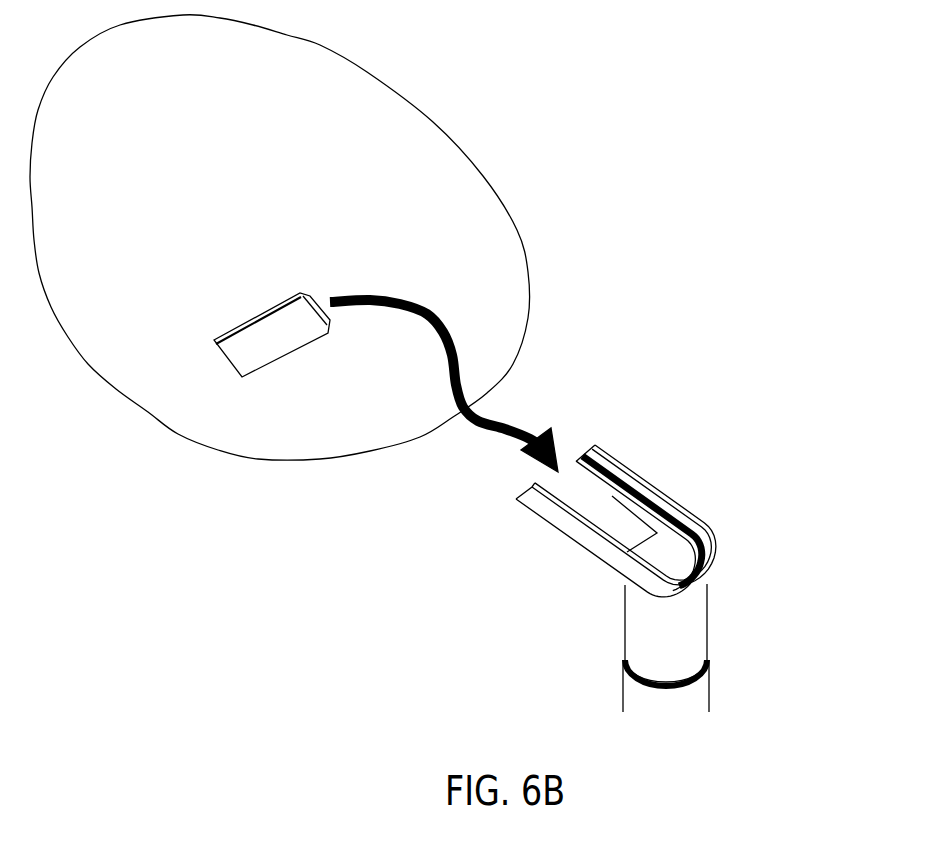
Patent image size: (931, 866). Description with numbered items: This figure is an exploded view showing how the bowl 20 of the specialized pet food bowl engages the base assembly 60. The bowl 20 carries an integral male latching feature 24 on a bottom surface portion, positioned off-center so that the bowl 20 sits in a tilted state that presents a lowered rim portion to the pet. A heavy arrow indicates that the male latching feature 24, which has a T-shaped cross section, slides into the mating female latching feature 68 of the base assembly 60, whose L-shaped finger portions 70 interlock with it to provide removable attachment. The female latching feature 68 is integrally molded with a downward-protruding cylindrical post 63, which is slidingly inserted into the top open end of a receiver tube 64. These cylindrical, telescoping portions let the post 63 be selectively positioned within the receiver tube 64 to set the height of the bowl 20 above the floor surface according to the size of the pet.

The bowl 20 is at (258, 455).
The male latching feature 24 is at (250, 357).
The base assembly 60 is at (612, 690).
The post 63 is at (695, 617).
The receiver tube 64 is at (692, 698).
The female latching feature 68 is at (673, 525).
The L-shaped finger portions 70 is at (617, 498).